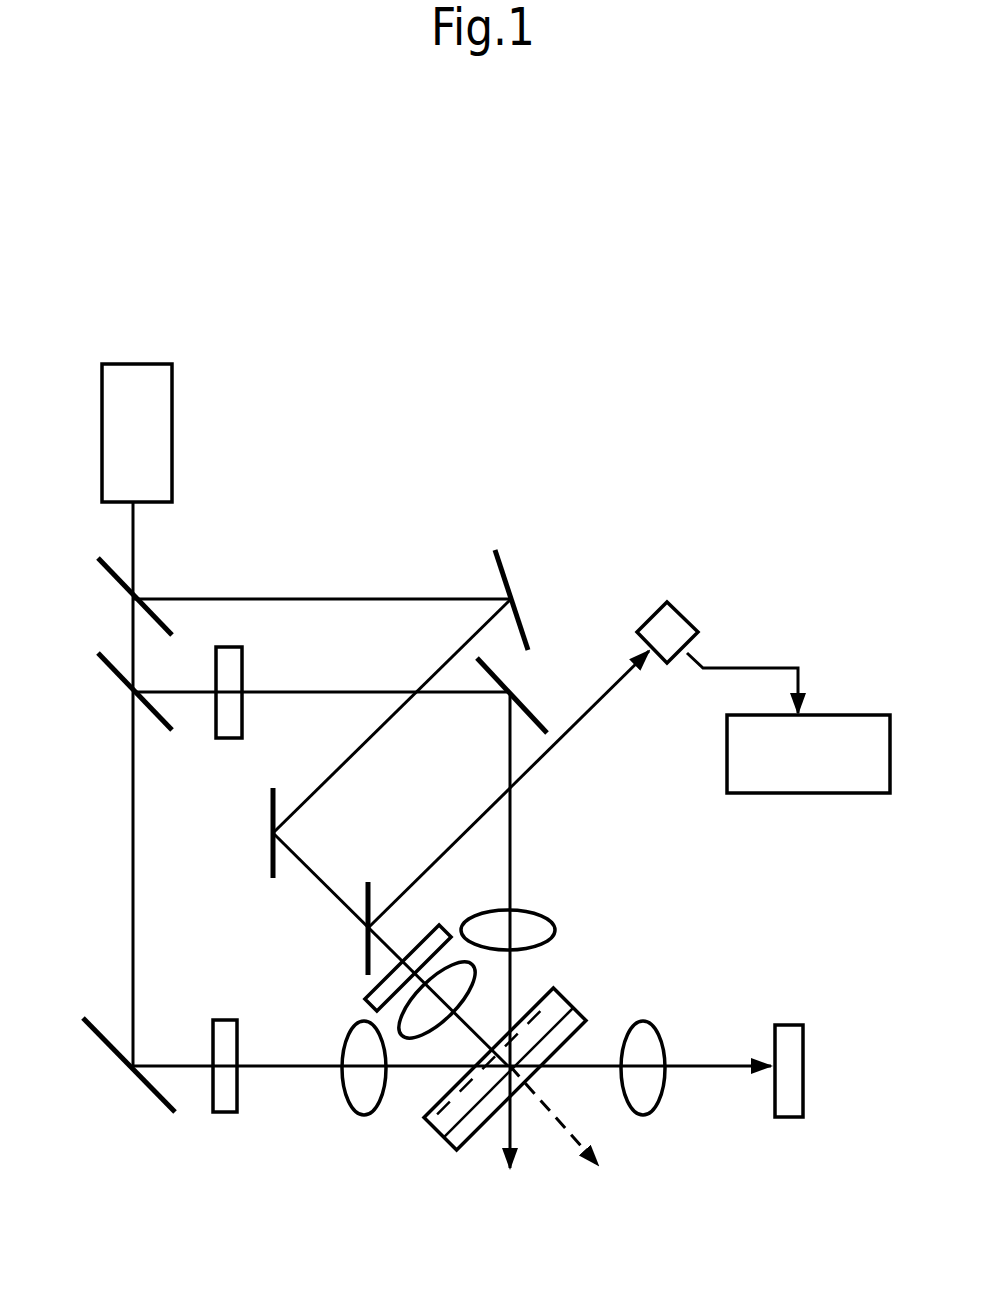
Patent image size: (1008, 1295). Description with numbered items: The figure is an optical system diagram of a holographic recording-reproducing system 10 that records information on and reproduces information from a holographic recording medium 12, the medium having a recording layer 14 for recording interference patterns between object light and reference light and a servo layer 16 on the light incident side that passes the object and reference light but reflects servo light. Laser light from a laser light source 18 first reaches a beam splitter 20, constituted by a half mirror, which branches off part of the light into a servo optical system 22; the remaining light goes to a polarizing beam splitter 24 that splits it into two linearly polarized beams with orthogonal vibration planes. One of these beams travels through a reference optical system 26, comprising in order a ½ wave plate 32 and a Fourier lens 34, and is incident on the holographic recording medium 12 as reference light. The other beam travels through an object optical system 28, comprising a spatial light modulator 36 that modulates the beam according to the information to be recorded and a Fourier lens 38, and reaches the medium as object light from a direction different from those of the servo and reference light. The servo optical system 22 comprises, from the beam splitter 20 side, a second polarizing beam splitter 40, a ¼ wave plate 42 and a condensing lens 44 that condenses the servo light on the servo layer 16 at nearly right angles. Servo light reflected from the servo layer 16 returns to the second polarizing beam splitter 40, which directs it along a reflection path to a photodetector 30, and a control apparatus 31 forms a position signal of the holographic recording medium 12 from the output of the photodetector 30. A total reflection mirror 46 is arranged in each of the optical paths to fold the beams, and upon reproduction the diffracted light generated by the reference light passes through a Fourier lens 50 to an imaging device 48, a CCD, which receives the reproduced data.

The holographic recording-reproducing system 10 is at (412, 448).
The holographic recording medium 12 is at (530, 1054).
The recording layer 14 is at (436, 1128).
The servo layer 16 is at (552, 988).
The laser light source 18 is at (172, 394).
The beam splitter 20 is at (124, 588).
The servo optical system 22 is at (352, 572).
The polarizing beam splitter 24 is at (122, 683).
The reference optical system 26 is at (354, 688).
The object optical system 28 is at (108, 898).
The photodetector 30 is at (678, 612).
The control apparatus 31 is at (857, 716).
The ½ wave plate 32 is at (232, 647).
The Fourier lens 34 is at (543, 910).
The spatial light modulator 36 is at (224, 1112).
The Fourier lens 38 is at (358, 1115).
The second polarizing beam splitter 40 is at (365, 966).
The ¼ wave plate 42 is at (428, 932).
The condensing lens 44 is at (400, 1017).
The total reflection mirror 46 is at (482, 664).
The imaging device 48 is at (790, 1025).
The Fourier lens 50 is at (657, 1114).